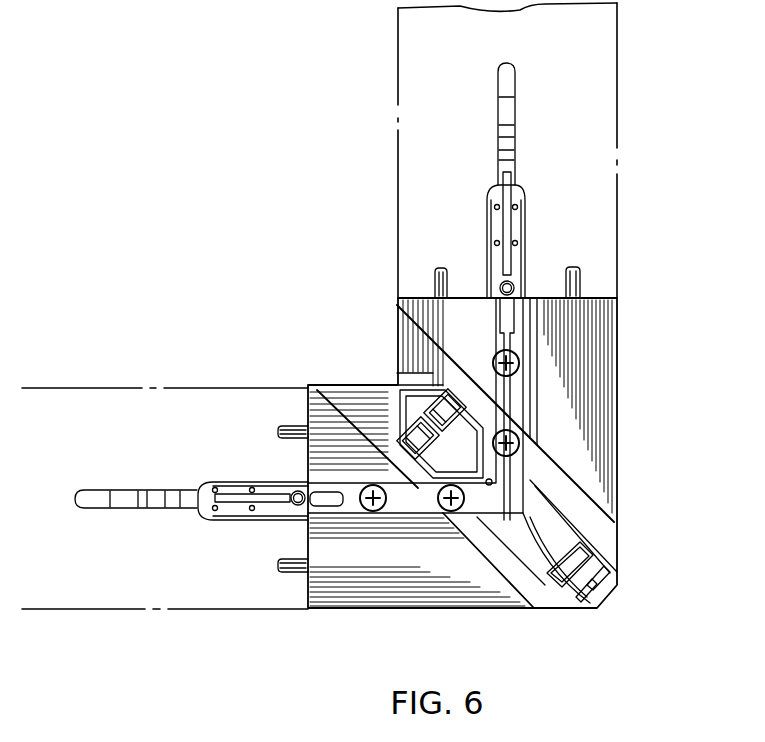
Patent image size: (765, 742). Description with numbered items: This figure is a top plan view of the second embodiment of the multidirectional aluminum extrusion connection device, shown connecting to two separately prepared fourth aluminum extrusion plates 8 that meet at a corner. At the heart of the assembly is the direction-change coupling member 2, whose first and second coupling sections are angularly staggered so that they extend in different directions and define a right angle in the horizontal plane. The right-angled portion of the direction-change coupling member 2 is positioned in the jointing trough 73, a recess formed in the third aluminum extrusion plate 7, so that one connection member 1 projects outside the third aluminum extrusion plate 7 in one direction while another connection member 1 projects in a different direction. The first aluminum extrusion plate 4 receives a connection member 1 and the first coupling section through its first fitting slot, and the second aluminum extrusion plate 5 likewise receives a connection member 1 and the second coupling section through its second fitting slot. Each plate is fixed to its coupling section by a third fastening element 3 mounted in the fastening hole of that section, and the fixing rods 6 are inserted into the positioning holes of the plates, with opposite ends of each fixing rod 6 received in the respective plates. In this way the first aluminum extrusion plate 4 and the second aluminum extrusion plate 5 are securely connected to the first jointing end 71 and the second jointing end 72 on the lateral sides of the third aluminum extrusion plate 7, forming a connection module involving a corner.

The connection member 1 is at (530, 263).
The direction-change coupling member 2 is at (508, 483).
The third fastening element 3 is at (518, 358).
The first aluminum extrusion plate 4 is at (590, 400).
The second aluminum extrusion plate 5 is at (327, 600).
The fixing rod 6 is at (434, 275).
The third aluminum extrusion plate 7 is at (607, 545).
The fourth aluminum extrusion plate 8 is at (615, 158).
The first jointing end 71 is at (580, 492).
The second jointing end 72 is at (357, 440).
The jointing trough 73 is at (510, 510).